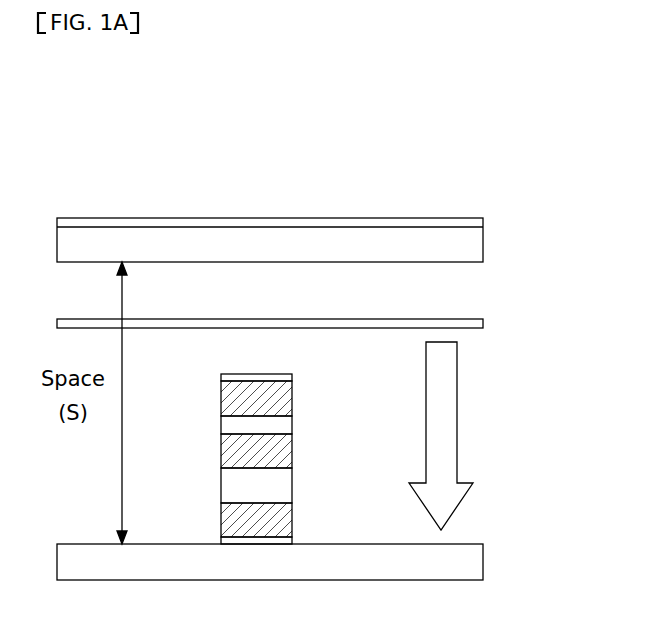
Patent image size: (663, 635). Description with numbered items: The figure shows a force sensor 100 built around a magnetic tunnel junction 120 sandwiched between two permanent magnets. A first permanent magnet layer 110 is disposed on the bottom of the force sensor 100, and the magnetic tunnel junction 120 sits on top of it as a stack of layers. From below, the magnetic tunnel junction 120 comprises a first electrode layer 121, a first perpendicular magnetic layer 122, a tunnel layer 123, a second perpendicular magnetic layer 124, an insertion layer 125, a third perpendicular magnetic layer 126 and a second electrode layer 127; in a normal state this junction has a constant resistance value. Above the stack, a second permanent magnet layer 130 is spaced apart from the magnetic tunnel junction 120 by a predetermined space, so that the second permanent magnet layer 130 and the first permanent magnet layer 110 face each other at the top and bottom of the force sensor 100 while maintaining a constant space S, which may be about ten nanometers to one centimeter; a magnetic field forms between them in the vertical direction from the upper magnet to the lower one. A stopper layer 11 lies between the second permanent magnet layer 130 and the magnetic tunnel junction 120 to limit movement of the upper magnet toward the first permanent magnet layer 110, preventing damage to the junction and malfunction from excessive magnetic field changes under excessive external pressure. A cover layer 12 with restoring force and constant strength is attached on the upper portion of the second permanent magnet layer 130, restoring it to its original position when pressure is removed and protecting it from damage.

The force sensor 100 is at (333, 152).
The cover layer 12 is at (483, 222).
The second permanent magnet layer 130 is at (478, 240).
The stopper layer 11 is at (483, 323).
The first permanent magnet layer 110 is at (478, 560).
The magnetic tunnel junction 120 is at (319, 449).
The first electrode layer 121 is at (292, 533).
The first perpendicular magnetic layer 122 is at (287, 513).
The tunnel layer 123 is at (287, 484).
The second perpendicular magnetic layer 124 is at (287, 455).
The insertion layer 125 is at (287, 426).
The third perpendicular magnetic layer 126 is at (287, 399).
The second electrode layer 127 is at (292, 378).